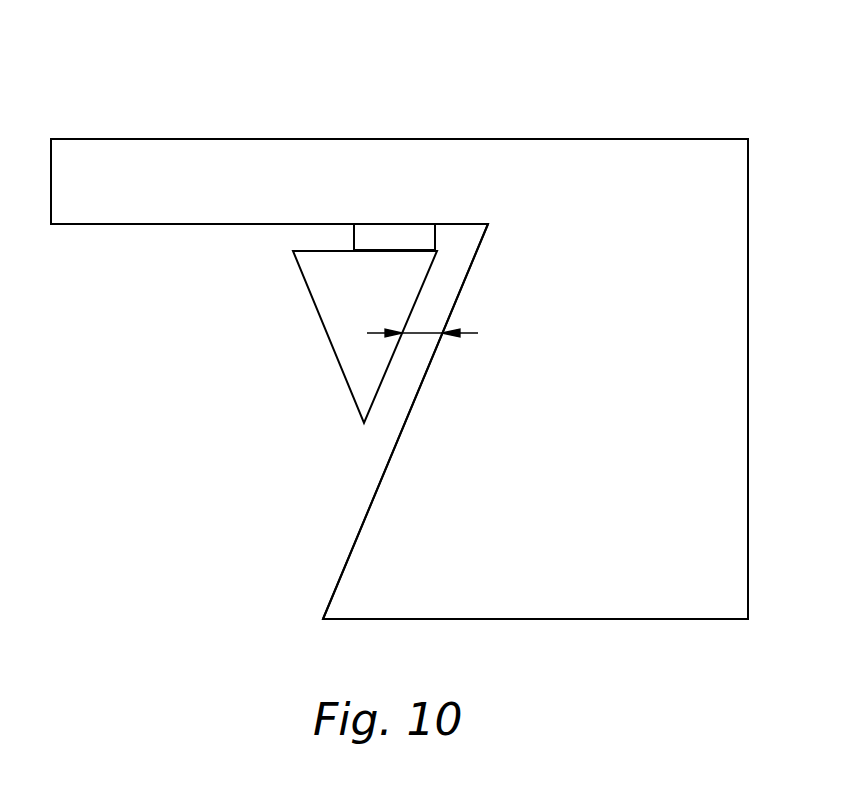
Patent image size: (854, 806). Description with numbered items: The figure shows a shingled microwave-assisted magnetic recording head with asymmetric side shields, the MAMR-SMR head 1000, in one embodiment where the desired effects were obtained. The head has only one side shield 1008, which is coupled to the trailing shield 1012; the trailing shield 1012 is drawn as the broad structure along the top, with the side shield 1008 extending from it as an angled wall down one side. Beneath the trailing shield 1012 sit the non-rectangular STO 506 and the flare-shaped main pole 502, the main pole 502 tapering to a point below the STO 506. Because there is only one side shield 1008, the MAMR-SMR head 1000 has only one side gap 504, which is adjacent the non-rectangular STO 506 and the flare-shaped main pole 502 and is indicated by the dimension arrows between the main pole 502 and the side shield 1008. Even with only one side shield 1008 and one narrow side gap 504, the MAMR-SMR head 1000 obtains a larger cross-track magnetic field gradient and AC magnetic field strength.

The MAMR-SMR head 1000 is at (150, 47).
The trailing shield 1012 is at (85, 148).
The side shield 1008 is at (357, 565).
The non-rectangular STO 506 is at (394, 236).
The flare-shaped main pole 502 is at (350, 362).
The side gap 504 is at (427, 330).